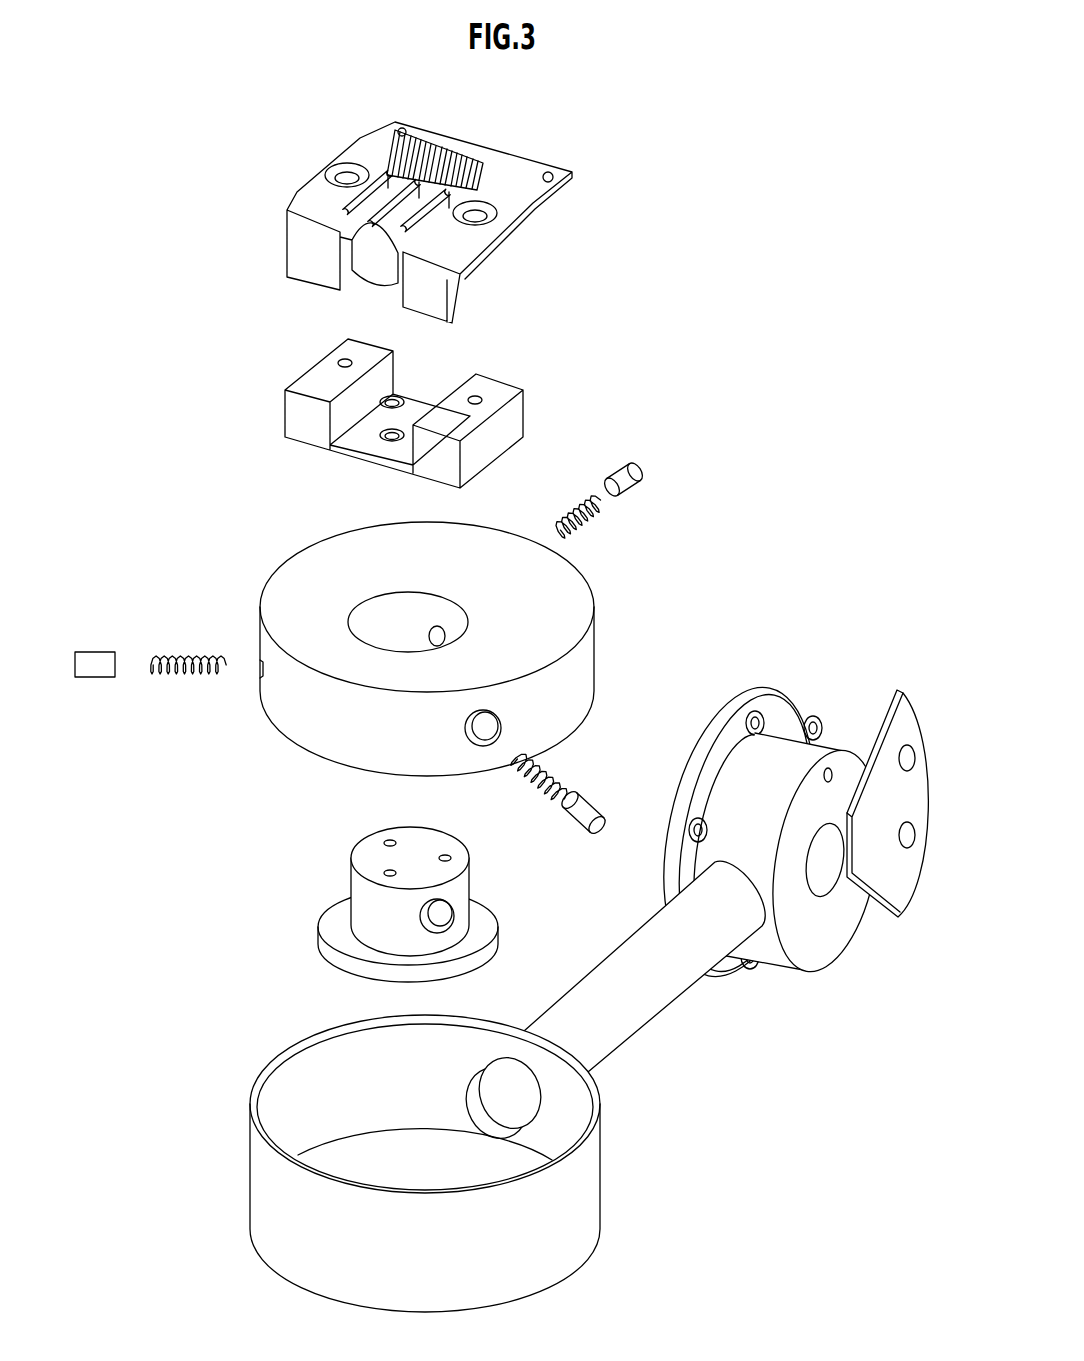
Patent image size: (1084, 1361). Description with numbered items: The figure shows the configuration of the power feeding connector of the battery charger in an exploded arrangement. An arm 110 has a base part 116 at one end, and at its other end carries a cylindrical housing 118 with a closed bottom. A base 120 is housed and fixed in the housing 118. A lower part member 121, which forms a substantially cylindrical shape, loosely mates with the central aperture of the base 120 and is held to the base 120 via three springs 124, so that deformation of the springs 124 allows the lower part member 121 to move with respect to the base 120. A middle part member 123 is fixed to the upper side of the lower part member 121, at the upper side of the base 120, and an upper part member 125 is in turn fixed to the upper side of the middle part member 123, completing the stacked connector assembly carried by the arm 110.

The arm 110 is at (597, 975).
The base part 116 is at (754, 686).
The cylindrical housing 118 is at (257, 1080).
The base 120 is at (291, 567).
The lower part member 121 is at (333, 903).
The middle part member 123 is at (501, 384).
The springs 124 is at (588, 525).
The upper part member 125 is at (526, 167).